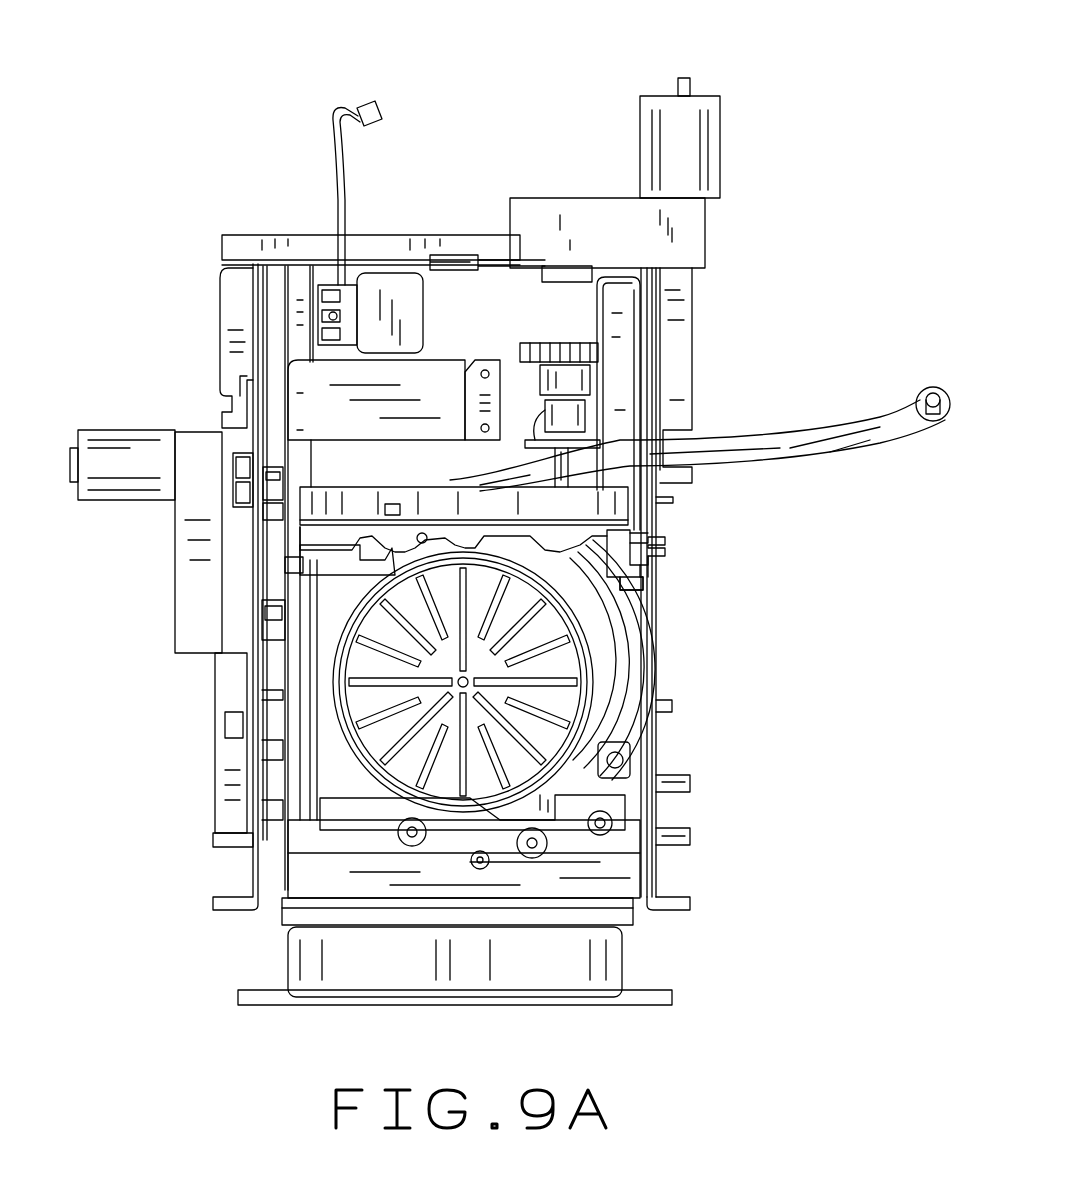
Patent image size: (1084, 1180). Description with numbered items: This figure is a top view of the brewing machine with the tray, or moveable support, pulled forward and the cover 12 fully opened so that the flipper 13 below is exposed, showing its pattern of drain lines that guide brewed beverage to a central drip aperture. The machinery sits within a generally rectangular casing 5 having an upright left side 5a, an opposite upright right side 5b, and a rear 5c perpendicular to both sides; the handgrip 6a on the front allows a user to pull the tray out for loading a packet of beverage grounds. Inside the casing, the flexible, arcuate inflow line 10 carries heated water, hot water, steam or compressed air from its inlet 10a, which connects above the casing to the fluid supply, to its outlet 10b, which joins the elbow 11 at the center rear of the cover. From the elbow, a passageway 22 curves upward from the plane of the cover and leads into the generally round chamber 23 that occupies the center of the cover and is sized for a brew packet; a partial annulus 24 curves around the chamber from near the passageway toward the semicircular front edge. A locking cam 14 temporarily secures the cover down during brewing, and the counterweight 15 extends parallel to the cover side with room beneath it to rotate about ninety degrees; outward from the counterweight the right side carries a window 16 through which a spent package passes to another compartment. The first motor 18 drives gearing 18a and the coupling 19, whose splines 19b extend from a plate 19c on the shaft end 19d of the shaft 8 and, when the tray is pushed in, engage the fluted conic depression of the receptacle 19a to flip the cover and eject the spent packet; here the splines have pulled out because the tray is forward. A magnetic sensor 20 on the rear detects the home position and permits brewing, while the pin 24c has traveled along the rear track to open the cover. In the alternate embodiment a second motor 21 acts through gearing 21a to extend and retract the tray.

The casing 5 is at (230, 180).
The left side 5a is at (257, 768).
The right side 5b is at (660, 347).
The rear 5c is at (296, 355).
The handgrip 6a is at (388, 985).
The shaft 8 is at (673, 500).
The inflow line 10 is at (845, 455).
The inlet 10a is at (923, 392).
The outlet 10b is at (520, 470).
The elbow 11 is at (458, 477).
The cover 12 is at (610, 533).
The wheel 13 is at (463, 552).
The locking cam 14 is at (605, 815).
The counterweight 15 is at (615, 740).
The window 16 is at (657, 690).
The first motor 18 is at (672, 128).
The gearing 18a is at (603, 238).
The coupling 19 is at (538, 270).
The receptacle 19a is at (568, 272).
The splines 19b is at (739, 365).
The plate 19c is at (577, 390).
The shaft end 19d is at (565, 420).
The magnetic sensor 20 is at (390, 335).
The second motor 21 is at (135, 445).
The gearing 21a is at (205, 460).
The passageway 22 is at (397, 510).
The chamber 23 is at (350, 530).
The partial annulus 24 is at (330, 545).
The pin 24c is at (292, 565).